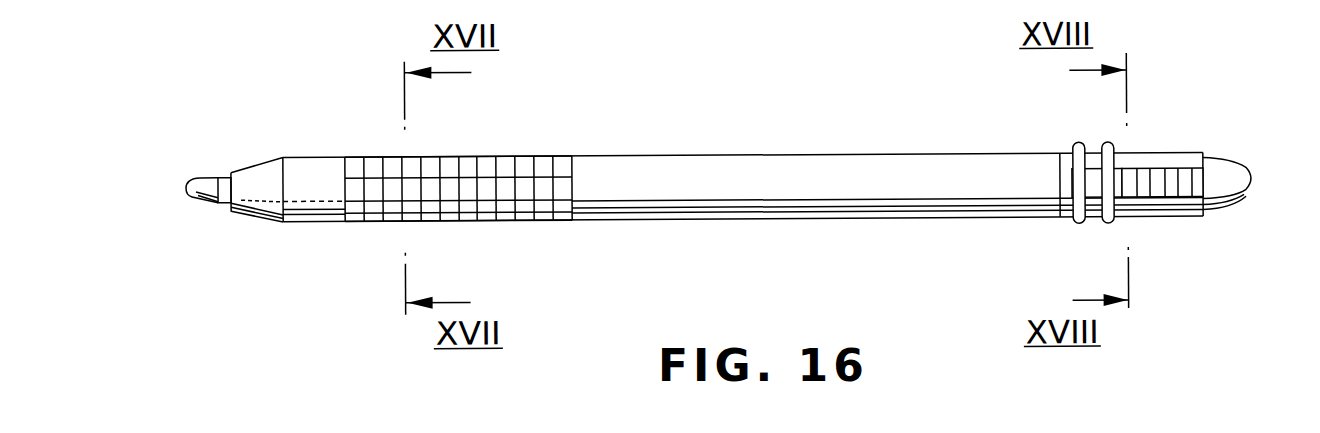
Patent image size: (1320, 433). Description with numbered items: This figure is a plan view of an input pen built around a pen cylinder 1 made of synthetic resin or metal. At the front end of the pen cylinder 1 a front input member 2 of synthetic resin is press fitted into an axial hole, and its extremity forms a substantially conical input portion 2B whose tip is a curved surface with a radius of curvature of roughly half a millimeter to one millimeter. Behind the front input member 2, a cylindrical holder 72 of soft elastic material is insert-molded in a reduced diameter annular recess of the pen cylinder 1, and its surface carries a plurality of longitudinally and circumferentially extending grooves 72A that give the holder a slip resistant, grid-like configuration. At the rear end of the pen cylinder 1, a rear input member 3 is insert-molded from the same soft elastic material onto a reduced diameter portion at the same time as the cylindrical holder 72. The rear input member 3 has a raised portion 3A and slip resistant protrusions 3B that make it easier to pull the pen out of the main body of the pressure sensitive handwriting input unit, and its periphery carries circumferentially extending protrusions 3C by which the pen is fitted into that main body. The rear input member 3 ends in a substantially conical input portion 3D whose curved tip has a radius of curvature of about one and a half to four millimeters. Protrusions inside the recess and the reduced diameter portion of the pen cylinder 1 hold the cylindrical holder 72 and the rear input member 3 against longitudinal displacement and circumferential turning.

The pen cylinder 1 is at (748, 165).
The front input member 2 is at (204, 170).
The input portion 2B is at (203, 202).
The cylindrical holder 72 is at (447, 169).
The grooves 72A is at (522, 198).
The rear input member 3 is at (1231, 154).
The raised portion 3A is at (1078, 184).
The slip resistant protrusions 3B is at (1145, 174).
The circumferentially extending protrusions 3C is at (1108, 227).
The input portion 3D is at (1238, 205).